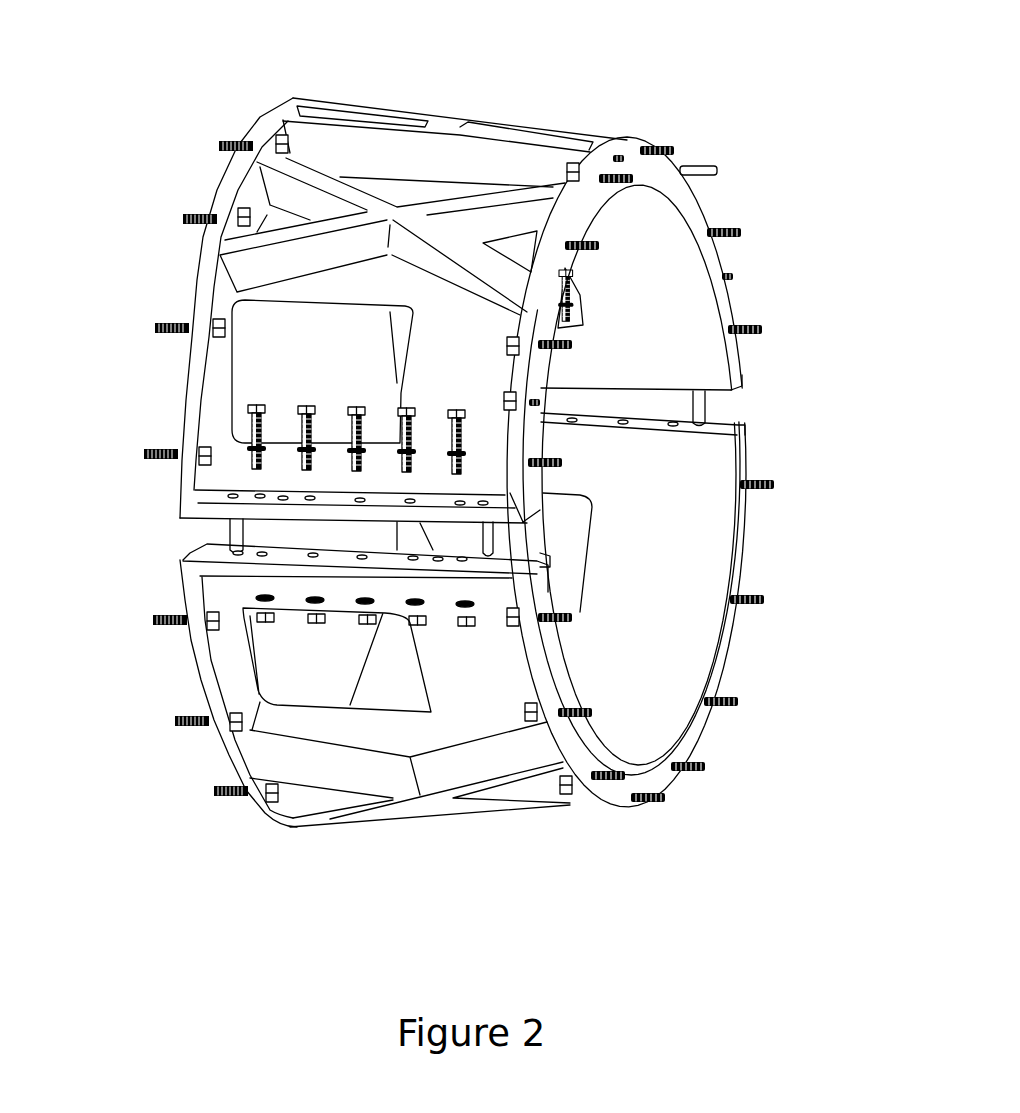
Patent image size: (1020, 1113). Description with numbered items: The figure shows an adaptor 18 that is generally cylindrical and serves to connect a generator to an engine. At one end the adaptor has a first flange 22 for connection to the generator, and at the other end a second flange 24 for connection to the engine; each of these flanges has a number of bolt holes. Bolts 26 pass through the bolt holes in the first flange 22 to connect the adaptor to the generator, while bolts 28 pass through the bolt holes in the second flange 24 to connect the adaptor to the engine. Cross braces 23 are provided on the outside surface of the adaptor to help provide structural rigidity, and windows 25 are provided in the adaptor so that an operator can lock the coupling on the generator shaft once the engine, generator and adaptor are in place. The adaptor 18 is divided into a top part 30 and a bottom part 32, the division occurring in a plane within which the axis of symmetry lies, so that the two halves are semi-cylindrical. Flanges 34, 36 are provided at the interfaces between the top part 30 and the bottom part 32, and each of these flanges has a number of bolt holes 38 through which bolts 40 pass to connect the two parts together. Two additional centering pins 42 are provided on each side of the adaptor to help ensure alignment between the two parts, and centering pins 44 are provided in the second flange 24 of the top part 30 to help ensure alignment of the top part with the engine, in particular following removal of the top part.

The adaptor 18 is at (131, 184).
The first flange 22 is at (187, 377).
The cross braces 23 is at (340, 790).
The second flange 24 is at (727, 300).
The windows 25 is at (313, 685).
The bolts 26 is at (165, 327).
The bolts 28 is at (737, 235).
The top part 30 is at (493, 122).
The bottom part 32 is at (458, 817).
The flange 34 is at (205, 512).
The flange 36 is at (193, 548).
The bolt holes 38 is at (297, 552).
The bolts 40 is at (253, 428).
The centering pins 42 is at (238, 532).
The centering pins 44 is at (707, 165).